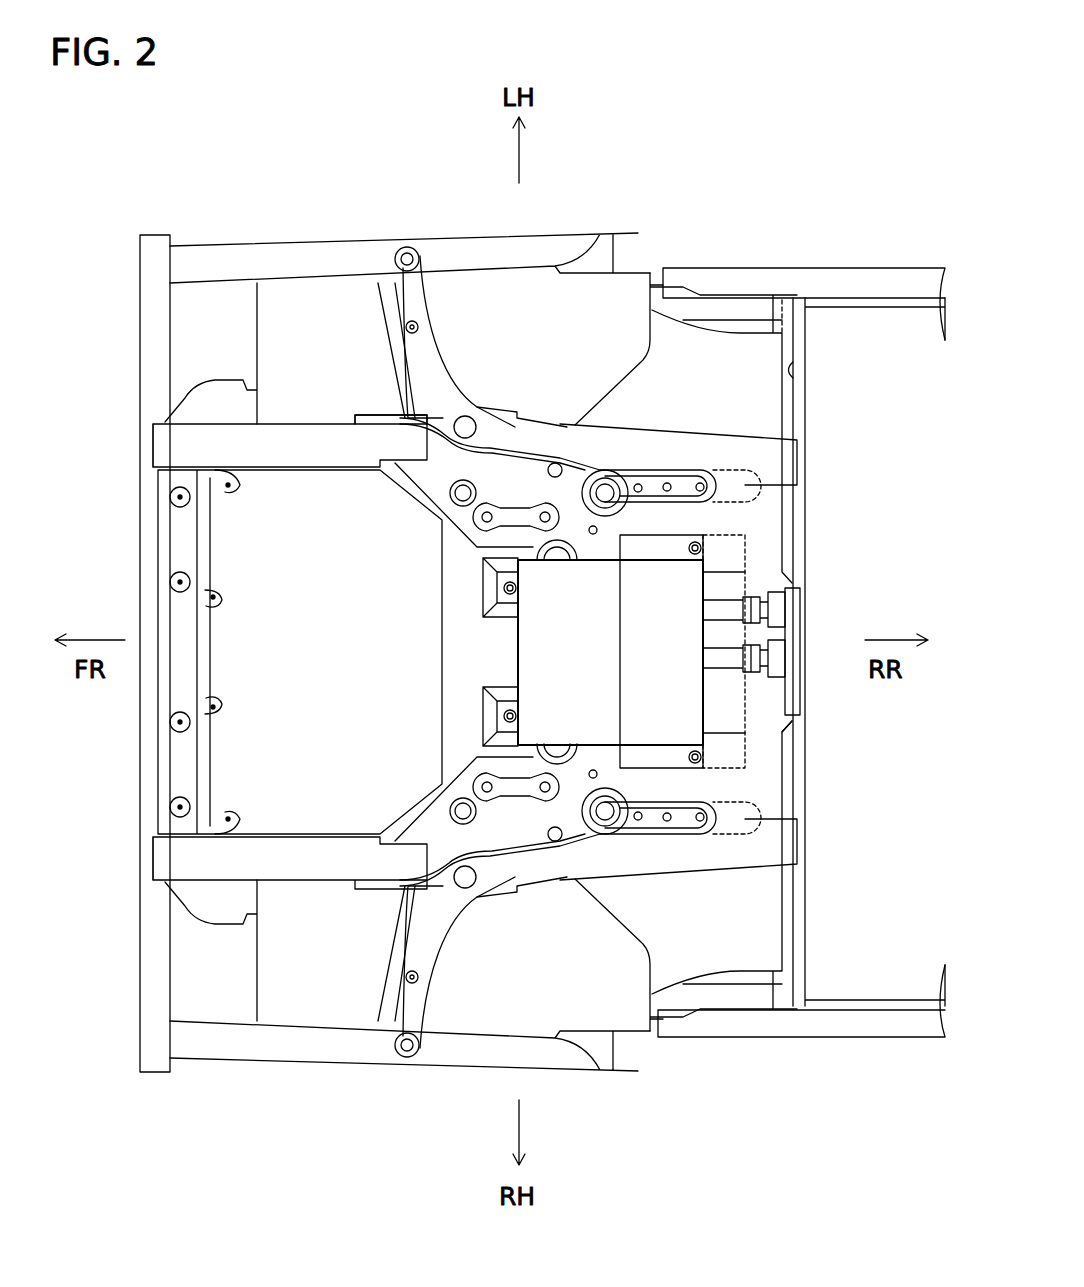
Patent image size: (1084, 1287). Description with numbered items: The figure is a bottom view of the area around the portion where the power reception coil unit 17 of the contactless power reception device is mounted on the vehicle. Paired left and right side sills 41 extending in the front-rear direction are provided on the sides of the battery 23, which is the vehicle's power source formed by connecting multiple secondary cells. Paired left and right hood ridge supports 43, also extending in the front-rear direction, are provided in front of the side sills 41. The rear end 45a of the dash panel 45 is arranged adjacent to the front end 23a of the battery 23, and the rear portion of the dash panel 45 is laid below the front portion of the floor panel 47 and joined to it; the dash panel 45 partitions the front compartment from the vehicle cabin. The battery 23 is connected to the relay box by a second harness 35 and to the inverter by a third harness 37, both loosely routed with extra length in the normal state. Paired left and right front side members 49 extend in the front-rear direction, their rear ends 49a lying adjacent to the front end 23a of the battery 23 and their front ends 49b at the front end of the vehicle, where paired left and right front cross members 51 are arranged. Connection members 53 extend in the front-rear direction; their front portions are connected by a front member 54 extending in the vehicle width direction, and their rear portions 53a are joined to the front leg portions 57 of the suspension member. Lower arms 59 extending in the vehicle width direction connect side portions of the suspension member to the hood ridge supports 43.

The power reception coil unit 17 is at (552, 652).
The battery 23 is at (912, 328).
The front end of the battery 23a is at (796, 372).
The second harness 35 is at (722, 618).
The third harness 37 is at (722, 666).
The side sill 41 is at (886, 280).
The hood ridge support 43 is at (322, 262).
The dash panel 45 is at (710, 360).
The rear end of the dash panel 45a is at (820, 300).
The floor panel 47 is at (862, 1018).
The front side member 49 is at (695, 457).
The rear end of the front side member 49a is at (800, 456).
The front end of the front side member 49b is at (150, 467).
The front cross member 51 is at (140, 324).
The connection member 53 is at (292, 447).
The rear portion of the connection member 53a is at (400, 437).
The front member 54 is at (165, 753).
The front leg portion 57 is at (420, 474).
The lower arm 59 is at (430, 360).